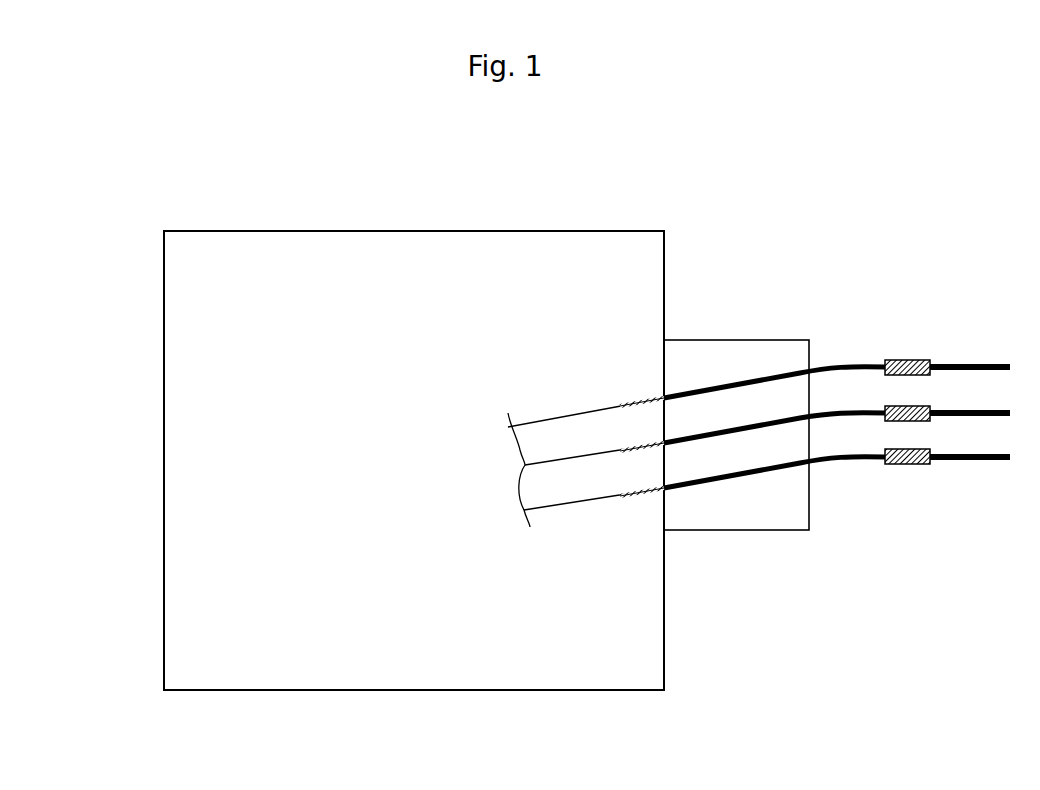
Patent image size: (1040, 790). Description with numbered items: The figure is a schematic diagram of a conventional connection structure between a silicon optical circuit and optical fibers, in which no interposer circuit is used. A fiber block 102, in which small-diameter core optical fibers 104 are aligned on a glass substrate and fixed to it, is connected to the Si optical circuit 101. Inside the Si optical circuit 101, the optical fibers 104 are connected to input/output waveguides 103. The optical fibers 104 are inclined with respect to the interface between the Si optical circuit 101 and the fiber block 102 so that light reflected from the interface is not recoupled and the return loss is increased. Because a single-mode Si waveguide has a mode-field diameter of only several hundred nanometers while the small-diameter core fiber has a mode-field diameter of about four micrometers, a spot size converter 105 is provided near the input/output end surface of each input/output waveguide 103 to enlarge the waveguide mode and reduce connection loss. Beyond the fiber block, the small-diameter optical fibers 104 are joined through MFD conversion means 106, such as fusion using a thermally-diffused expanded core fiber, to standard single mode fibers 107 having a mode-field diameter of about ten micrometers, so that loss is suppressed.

The Si optical circuit 101 is at (413, 243).
The fiber block 102 is at (733, 338).
The input/output waveguides 103 is at (663, 495).
The small-diameter core optical fibers 104 is at (667, 485).
The spot size converter 105 is at (645, 400).
The MFD conversion means 106 is at (910, 358).
The standard single mode fibers 107 is at (972, 362).